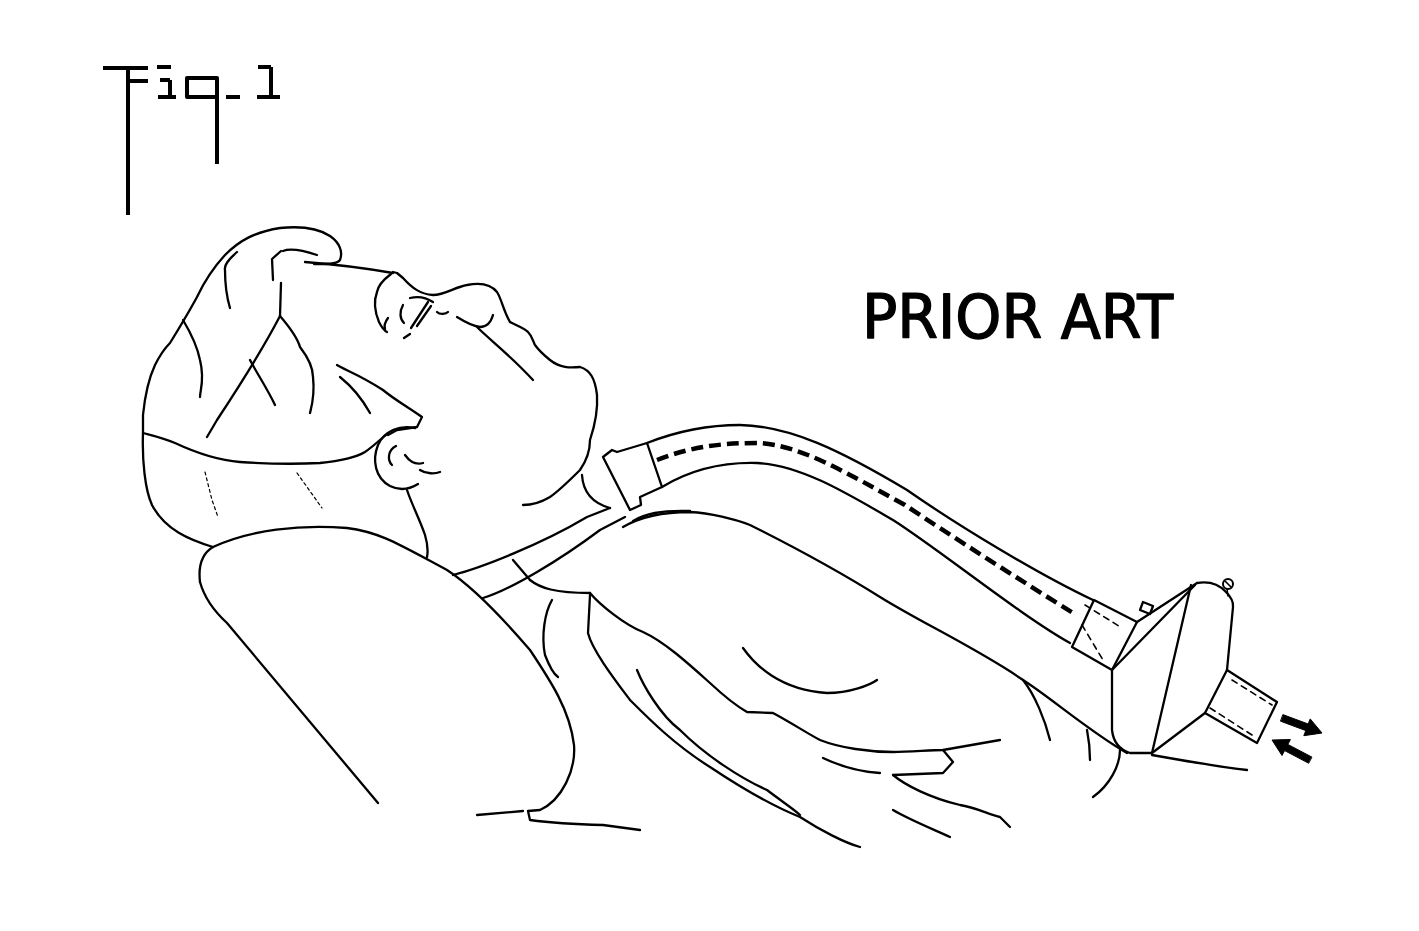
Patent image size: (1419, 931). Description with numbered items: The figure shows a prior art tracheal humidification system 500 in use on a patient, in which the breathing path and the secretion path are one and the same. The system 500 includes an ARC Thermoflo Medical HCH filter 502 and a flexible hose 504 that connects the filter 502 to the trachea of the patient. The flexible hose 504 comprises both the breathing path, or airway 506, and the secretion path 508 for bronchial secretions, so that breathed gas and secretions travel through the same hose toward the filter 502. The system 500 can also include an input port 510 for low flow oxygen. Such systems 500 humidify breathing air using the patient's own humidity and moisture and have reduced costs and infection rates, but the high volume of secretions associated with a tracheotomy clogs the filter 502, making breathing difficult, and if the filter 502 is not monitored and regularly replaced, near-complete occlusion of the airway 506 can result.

The system 500 is at (1000, 576).
The HCH filter 502 is at (1183, 660).
The flexible hose 504 is at (897, 470).
The breathing path (airway) 506 is at (1310, 744).
The secretion path 508 is at (1012, 570).
The input port 510 is at (1225, 581).